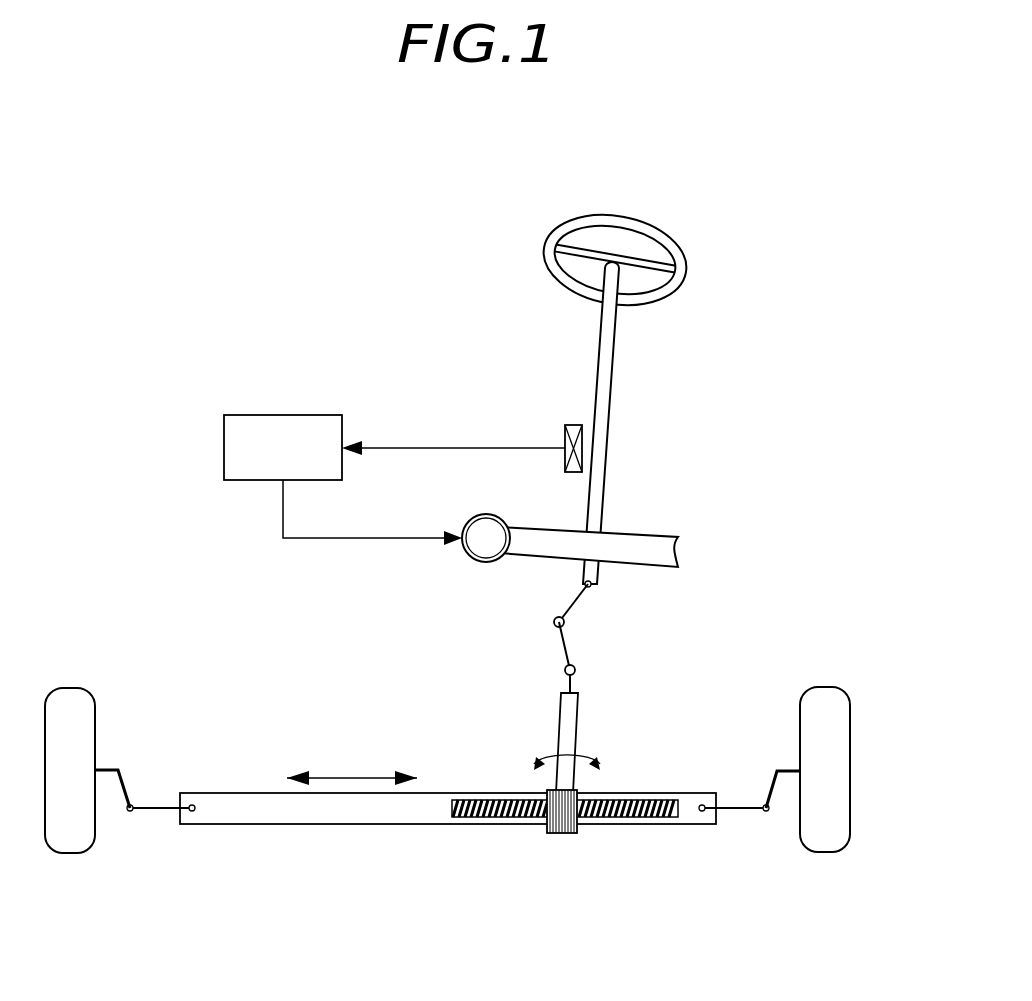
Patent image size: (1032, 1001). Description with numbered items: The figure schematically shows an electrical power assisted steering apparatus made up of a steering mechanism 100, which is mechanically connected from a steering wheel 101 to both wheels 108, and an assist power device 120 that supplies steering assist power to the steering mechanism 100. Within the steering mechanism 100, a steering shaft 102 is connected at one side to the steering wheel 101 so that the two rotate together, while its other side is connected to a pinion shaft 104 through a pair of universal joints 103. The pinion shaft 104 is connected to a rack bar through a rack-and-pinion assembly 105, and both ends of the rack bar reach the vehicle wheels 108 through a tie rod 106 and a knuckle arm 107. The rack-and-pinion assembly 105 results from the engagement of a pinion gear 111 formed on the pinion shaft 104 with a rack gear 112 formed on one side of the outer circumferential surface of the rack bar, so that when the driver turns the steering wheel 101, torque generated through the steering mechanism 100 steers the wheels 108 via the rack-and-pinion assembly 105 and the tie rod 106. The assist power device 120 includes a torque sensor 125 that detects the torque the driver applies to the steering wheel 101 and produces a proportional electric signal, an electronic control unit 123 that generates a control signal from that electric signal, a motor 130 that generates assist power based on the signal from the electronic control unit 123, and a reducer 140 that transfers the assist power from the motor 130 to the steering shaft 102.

The steering mechanism 100 is at (340, 233).
The steering wheel 101 is at (548, 243).
The steering shaft 102 is at (610, 372).
The universal joints 103 is at (578, 605).
The pinion shaft 104 is at (560, 725).
The rack-and-pinion assembly 105 is at (578, 902).
The tie rod 106 is at (744, 806).
The knuckle arm 107 is at (110, 768).
The wheels 108 is at (838, 698).
The pinion gear 111 is at (558, 835).
The rack gear 112 is at (609, 818).
The assist power device 120 is at (221, 381).
The electronic control unit (ECU) 123 is at (323, 415).
The torque sensor 125 is at (566, 440).
The motor 130 is at (483, 548).
The reducer 140 is at (605, 532).